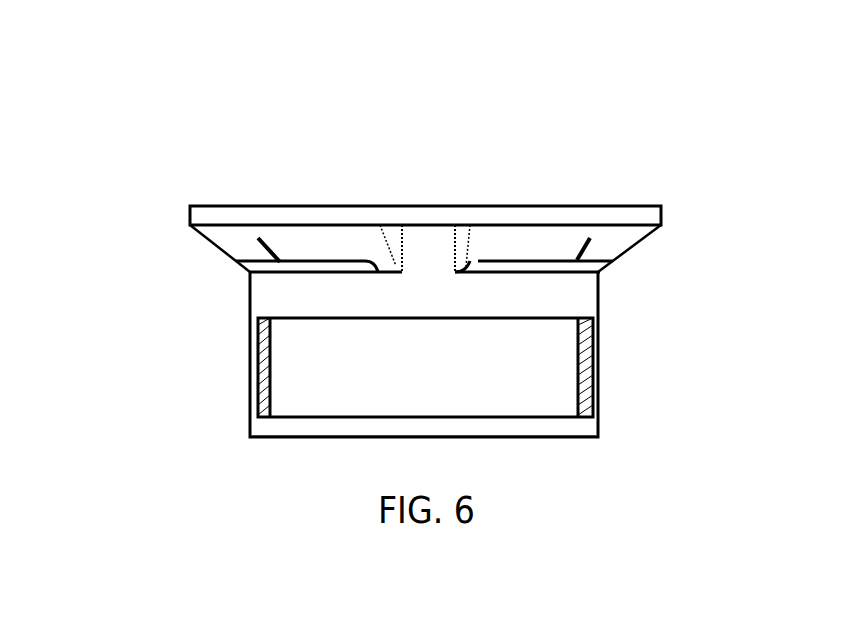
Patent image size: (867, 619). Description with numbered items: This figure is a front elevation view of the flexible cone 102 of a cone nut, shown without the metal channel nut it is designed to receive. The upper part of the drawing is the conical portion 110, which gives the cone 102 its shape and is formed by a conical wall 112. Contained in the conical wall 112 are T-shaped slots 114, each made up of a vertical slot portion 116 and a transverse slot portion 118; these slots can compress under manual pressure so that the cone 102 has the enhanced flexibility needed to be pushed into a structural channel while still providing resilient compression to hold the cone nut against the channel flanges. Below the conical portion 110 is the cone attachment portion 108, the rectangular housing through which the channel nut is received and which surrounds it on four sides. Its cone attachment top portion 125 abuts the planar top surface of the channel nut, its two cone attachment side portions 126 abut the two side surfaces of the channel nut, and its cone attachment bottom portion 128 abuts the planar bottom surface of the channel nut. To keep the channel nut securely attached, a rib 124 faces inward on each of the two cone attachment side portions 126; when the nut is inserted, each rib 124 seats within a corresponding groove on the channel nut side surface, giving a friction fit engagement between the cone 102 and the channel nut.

The flexible cone 102 is at (325, 140).
The cone attachment portion 108 is at (224, 375).
The conical portion 110 is at (660, 252).
The conical wall 112 is at (323, 242).
The T-shaped slot 114 is at (616, 256).
The vertical slot portion 116 is at (585, 251).
The transverse slot portion 118 is at (600, 270).
The rib 124 is at (590, 392).
The cone attachment top portion 125 is at (457, 306).
The cone attachment side portion 126 is at (260, 404).
The cone attachment bottom portion 128 is at (572, 427).